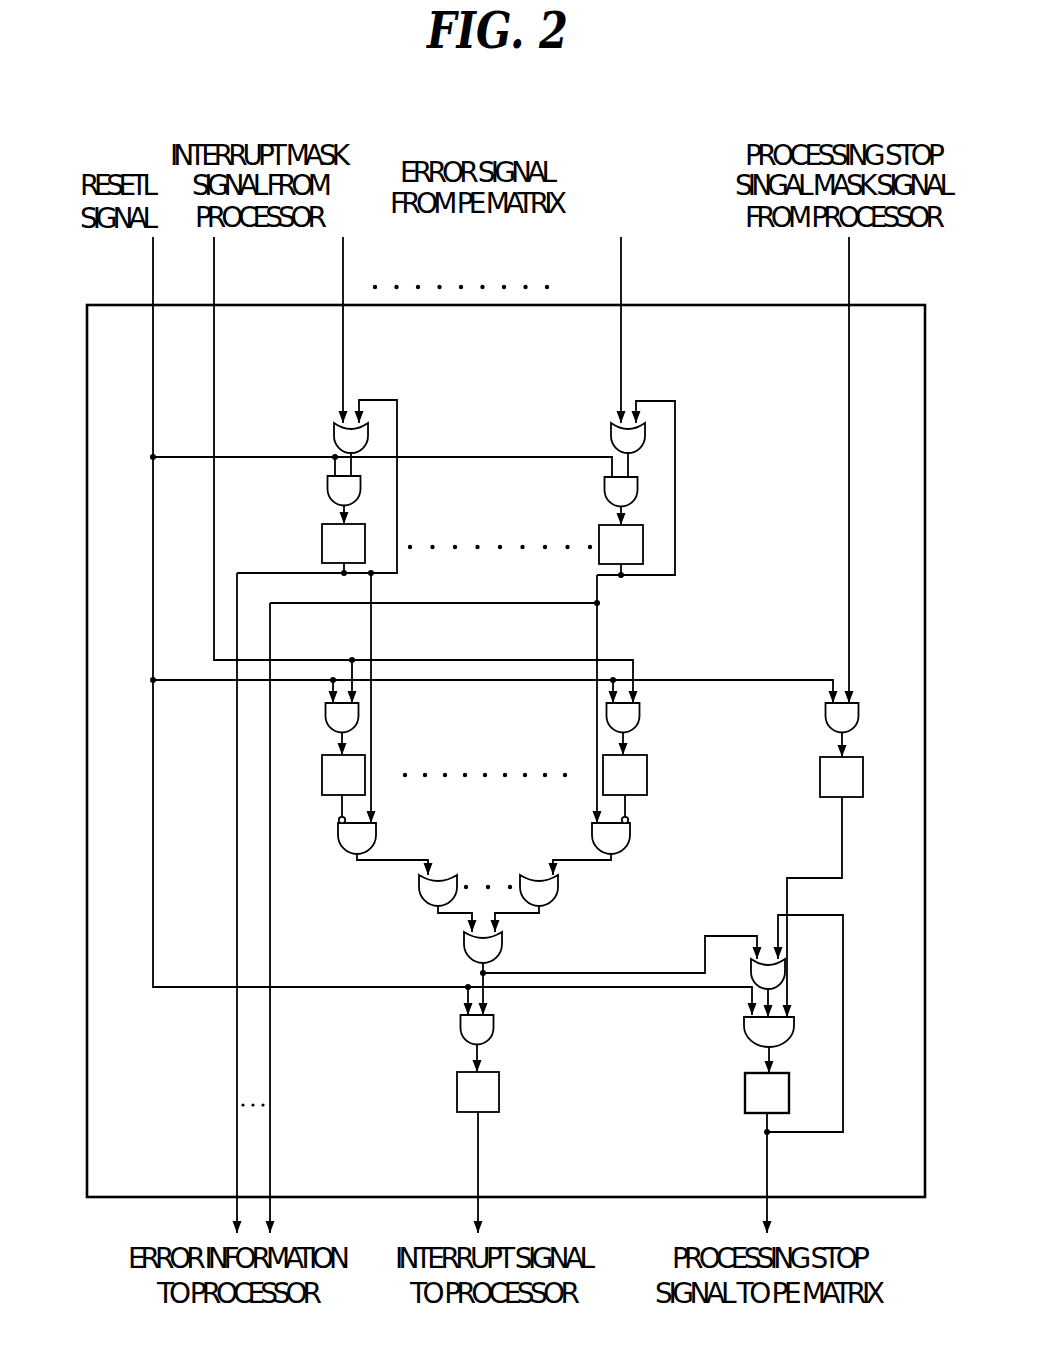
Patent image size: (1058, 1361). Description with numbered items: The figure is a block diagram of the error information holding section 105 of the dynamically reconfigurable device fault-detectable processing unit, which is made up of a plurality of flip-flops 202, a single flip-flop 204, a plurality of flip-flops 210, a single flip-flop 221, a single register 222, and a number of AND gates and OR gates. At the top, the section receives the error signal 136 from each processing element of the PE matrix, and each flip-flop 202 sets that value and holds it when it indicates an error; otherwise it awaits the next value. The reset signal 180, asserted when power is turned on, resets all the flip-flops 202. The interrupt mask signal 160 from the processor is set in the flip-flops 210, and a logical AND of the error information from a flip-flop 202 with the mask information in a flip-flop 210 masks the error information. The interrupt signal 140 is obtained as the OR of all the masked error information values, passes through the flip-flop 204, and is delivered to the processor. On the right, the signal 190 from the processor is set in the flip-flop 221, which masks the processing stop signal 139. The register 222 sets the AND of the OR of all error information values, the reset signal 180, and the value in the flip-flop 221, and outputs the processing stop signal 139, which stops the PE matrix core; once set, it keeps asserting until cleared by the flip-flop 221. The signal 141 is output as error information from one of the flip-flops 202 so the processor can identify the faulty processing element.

The error information holding section 105 is at (750, 305).
The reset signal 180 is at (152, 258).
The interrupt mask signal 160 is at (214, 258).
The error signal 136 is at (345, 258).
The signal 190 is at (851, 258).
The flip-flop 202 is at (322, 528).
The flip-flop 210 is at (322, 768).
The flip-flop 221 is at (820, 762).
The flip-flop 204 is at (455, 1088).
The register 222 is at (745, 1090).
The signal 141 is at (272, 1163).
The interrupt signal 140 is at (477, 1163).
The processing stop signal 139 is at (766, 1165).